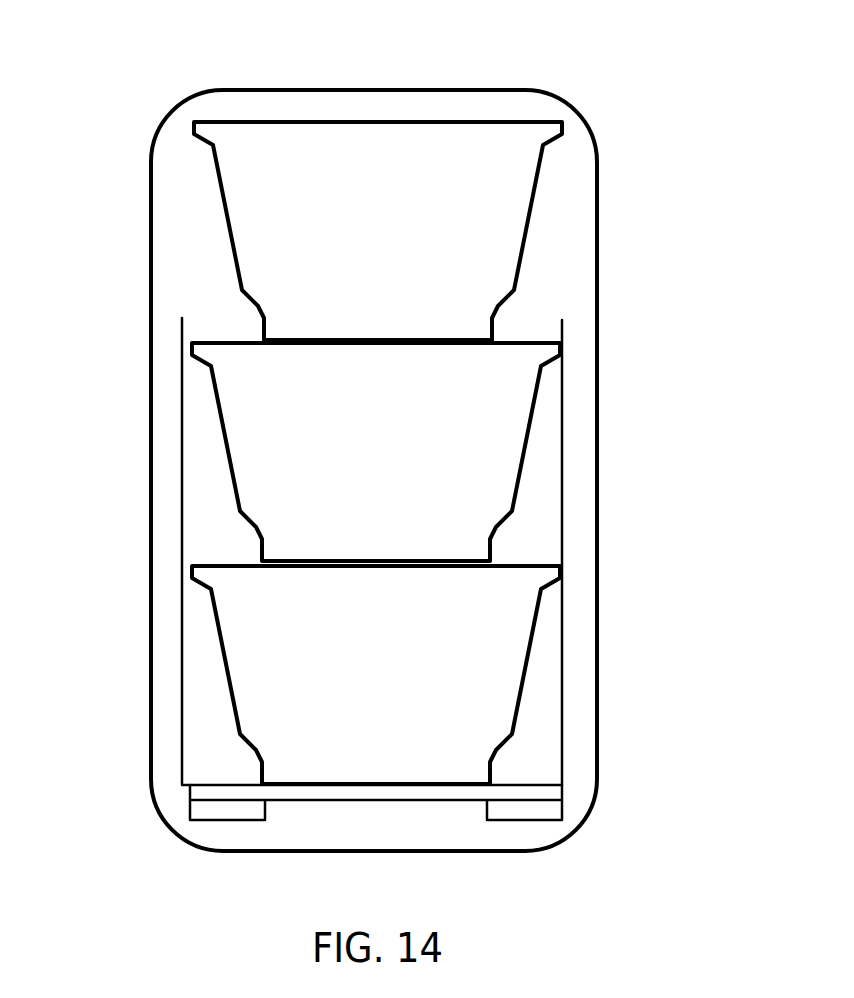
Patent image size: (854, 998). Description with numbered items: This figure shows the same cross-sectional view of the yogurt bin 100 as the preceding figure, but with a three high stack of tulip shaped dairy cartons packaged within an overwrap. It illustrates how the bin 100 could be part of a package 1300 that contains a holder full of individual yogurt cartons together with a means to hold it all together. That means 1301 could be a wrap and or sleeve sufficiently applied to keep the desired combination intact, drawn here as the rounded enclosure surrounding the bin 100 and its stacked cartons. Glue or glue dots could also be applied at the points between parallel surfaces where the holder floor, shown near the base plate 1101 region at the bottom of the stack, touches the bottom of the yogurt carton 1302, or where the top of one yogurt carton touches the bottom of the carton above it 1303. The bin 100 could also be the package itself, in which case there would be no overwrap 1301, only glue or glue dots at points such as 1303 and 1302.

The package 1300 is at (236, 82).
The means to hold it all together 1301 is at (150, 568).
The base plate 1101 is at (568, 790).
The bin 100 is at (532, 320).
The point where the top of the yogurt carton touches the bottom of the yogurt carton 1303 is at (250, 333).
The bottom of the yogurt carton 1302 is at (492, 778).